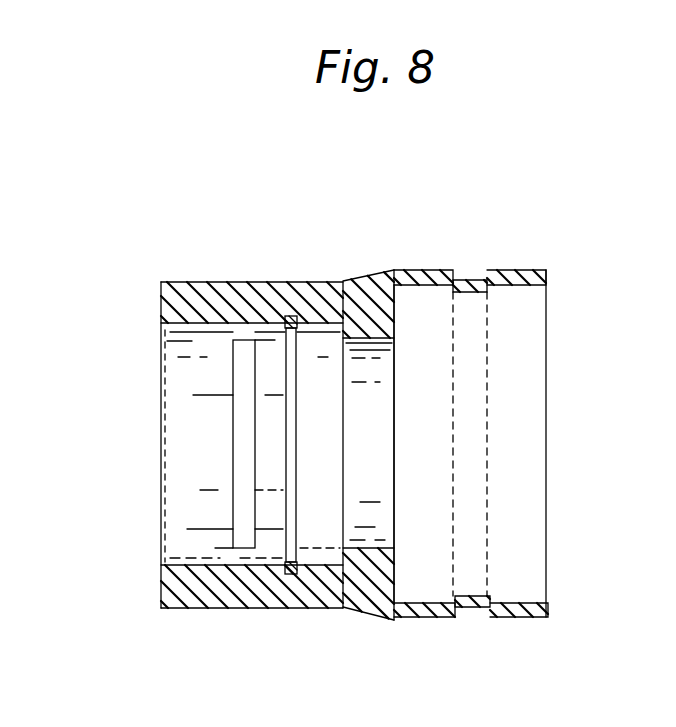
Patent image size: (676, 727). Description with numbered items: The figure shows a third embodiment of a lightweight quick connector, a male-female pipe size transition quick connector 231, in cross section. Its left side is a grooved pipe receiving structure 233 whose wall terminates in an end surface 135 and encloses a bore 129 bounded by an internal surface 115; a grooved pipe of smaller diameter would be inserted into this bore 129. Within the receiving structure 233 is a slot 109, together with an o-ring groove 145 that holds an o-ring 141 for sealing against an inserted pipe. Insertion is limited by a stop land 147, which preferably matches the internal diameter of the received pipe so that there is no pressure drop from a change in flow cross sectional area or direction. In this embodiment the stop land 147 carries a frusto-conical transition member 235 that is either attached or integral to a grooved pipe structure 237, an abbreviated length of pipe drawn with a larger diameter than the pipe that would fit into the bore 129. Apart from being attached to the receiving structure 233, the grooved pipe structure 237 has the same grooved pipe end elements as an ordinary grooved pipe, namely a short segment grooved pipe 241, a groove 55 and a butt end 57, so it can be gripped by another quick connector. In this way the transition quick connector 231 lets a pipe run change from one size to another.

The male-female pipe size transition quick connector 231 is at (137, 205).
The grooved pipe receiving structure 233 is at (178, 268).
The frusto-conical transition member 235 is at (378, 272).
The groove 55 is at (466, 280).
The grooved pipe structure 237 is at (550, 230).
The butt end 57 is at (548, 278).
The internal surface 115 is at (238, 326).
The o-ring 141 is at (290, 330).
The slot 109 is at (237, 428).
The o-ring groove 145 is at (298, 405).
The stop land 147 is at (342, 553).
The bore 129 is at (197, 565).
The end surface 135 is at (160, 585).
The short segment grooved pipe 241 is at (437, 617).